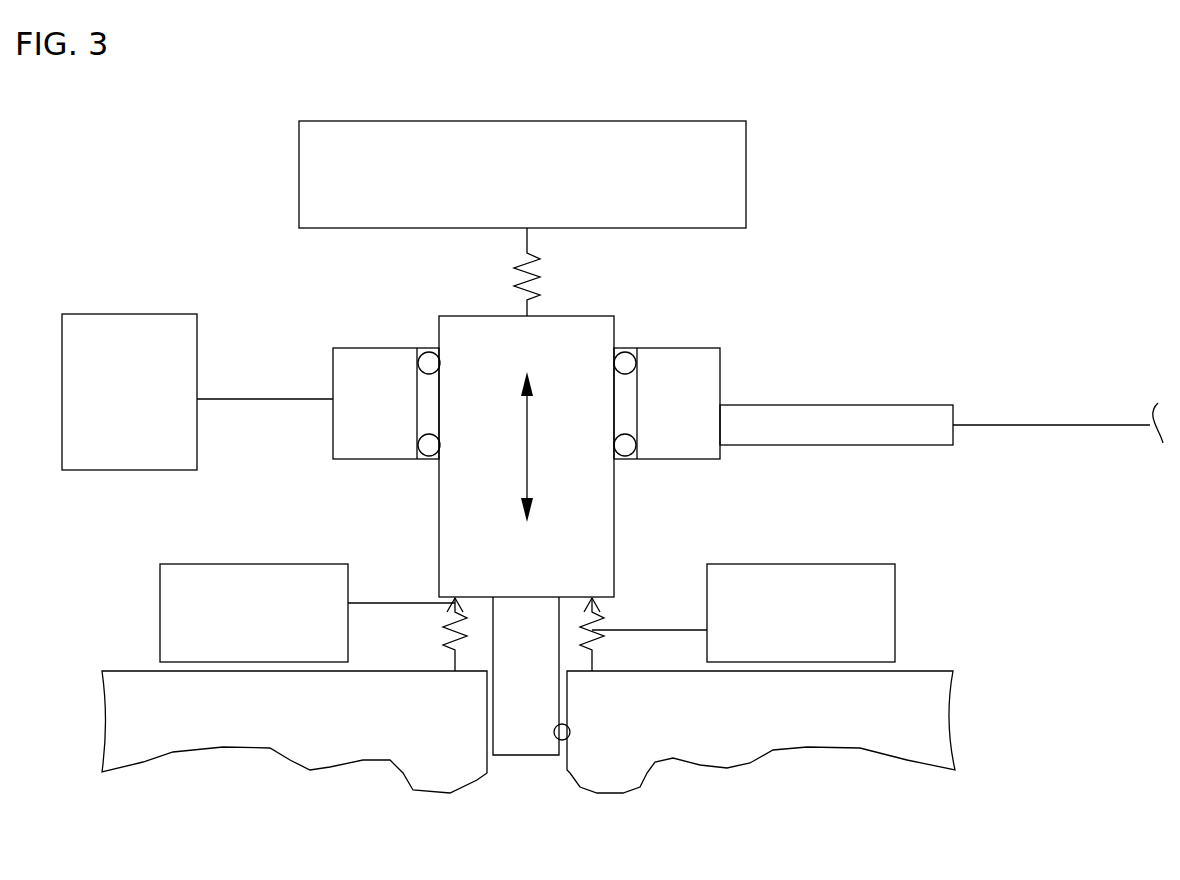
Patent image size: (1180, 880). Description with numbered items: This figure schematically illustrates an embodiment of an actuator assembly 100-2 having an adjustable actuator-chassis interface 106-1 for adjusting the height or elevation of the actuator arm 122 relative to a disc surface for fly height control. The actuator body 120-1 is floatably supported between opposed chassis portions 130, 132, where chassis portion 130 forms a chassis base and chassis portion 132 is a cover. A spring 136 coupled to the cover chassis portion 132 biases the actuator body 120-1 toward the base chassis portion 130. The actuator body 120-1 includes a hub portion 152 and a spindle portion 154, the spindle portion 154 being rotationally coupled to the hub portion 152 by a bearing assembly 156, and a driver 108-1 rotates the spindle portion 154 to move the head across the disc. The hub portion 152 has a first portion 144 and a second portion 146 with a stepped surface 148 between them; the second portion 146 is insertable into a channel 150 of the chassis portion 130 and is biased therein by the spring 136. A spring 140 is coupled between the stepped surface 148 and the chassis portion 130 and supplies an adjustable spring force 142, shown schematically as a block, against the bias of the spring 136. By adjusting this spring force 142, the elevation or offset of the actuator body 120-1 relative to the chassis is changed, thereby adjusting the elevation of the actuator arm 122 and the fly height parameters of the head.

The printer assembly 100-2 is at (1002, 246).
The drive assembly 106-1 is at (762, 246).
The driver 108-1 is at (100, 314).
The actuator body 120-1 is at (605, 496).
The actuator arm 122 is at (872, 405).
The chassis portion 130 is at (913, 671).
The chassis portion 132 is at (546, 121).
The spring 136 is at (540, 275).
The spring 140 is at (452, 622).
The adjustable spring force 142 is at (222, 564).
The first portion 144 is at (440, 521).
The second portion 146 is at (526, 676).
The stepped surface 148 is at (592, 597).
The channel 150 is at (568, 742).
The hub portion 152 is at (546, 561).
The spindle portion 154 is at (670, 352).
The bearing assembly 156 is at (428, 455).